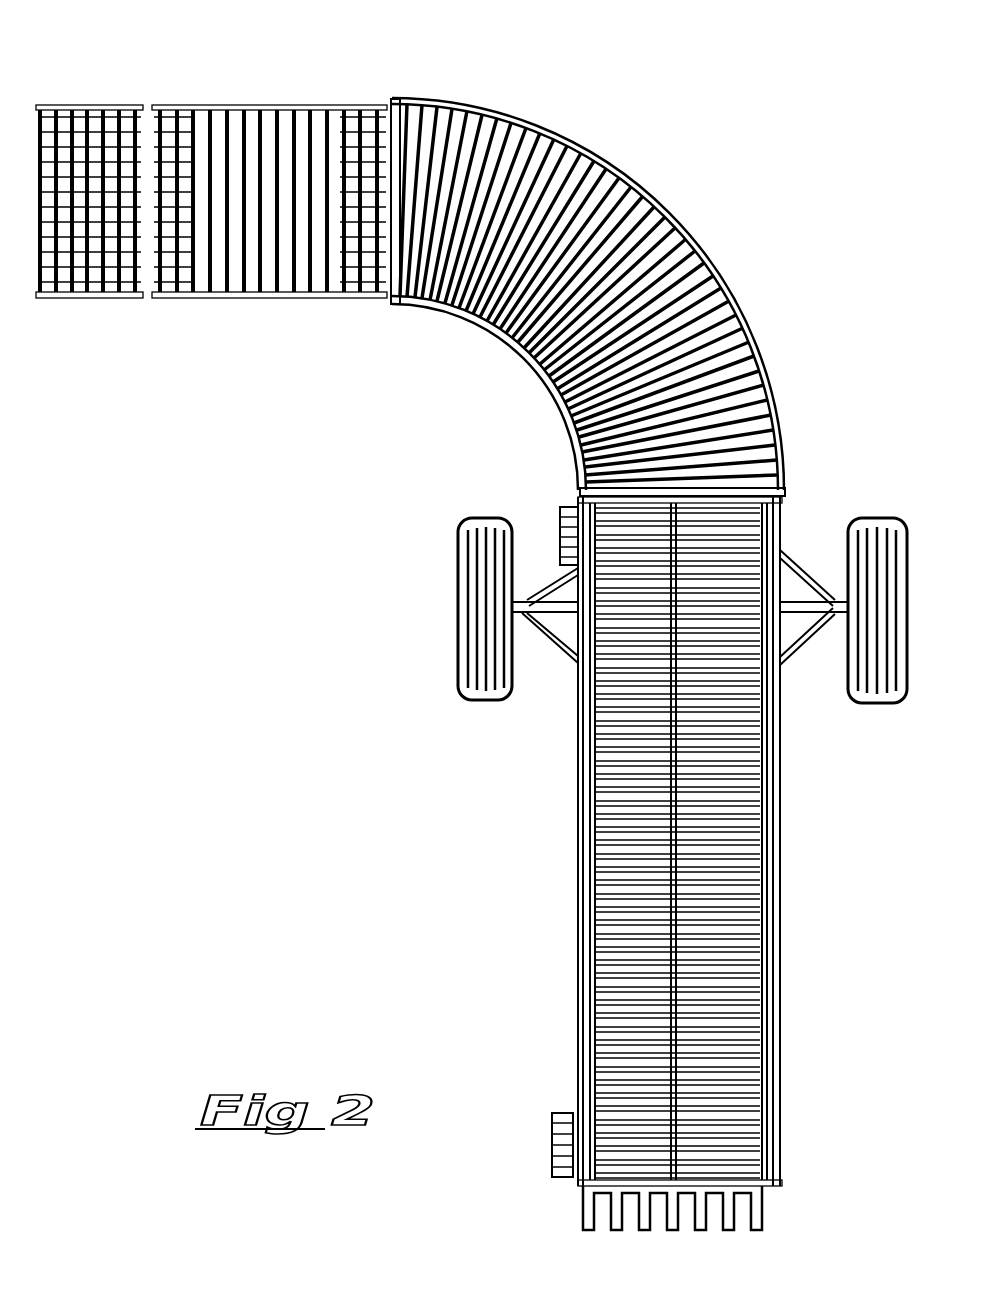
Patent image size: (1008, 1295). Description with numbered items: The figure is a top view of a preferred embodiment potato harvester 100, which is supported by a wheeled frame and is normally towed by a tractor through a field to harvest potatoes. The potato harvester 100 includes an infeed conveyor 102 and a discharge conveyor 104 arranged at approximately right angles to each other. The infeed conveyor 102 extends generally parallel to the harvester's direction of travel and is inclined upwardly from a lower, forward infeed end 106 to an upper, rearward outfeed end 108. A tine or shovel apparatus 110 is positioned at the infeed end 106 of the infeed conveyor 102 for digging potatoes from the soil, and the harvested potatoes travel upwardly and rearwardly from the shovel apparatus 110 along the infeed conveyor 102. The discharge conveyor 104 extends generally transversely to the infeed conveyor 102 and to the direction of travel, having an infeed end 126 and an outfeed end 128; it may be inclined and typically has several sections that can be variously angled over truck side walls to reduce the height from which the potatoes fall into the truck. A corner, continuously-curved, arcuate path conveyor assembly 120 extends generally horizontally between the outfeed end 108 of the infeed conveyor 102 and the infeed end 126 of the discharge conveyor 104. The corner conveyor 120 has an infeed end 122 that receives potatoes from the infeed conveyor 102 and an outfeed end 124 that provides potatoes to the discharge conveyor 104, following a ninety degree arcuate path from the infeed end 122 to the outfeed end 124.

The potato harvester 100 is at (313, 60).
The infeed conveyor 102 is at (673, 844).
The discharge conveyor 104 is at (277, 242).
The infeed end 106 is at (560, 1165).
The outfeed end 108 is at (578, 505).
The tine or shovel apparatus 110 is at (585, 1210).
The corner continuously-curved arcuate path conveyor assembly 120 is at (597, 267).
The infeed end 122 is at (770, 473).
The outfeed end 124 is at (410, 100).
The infeed end 126 is at (345, 300).
The outfeed end 128 is at (42, 297).